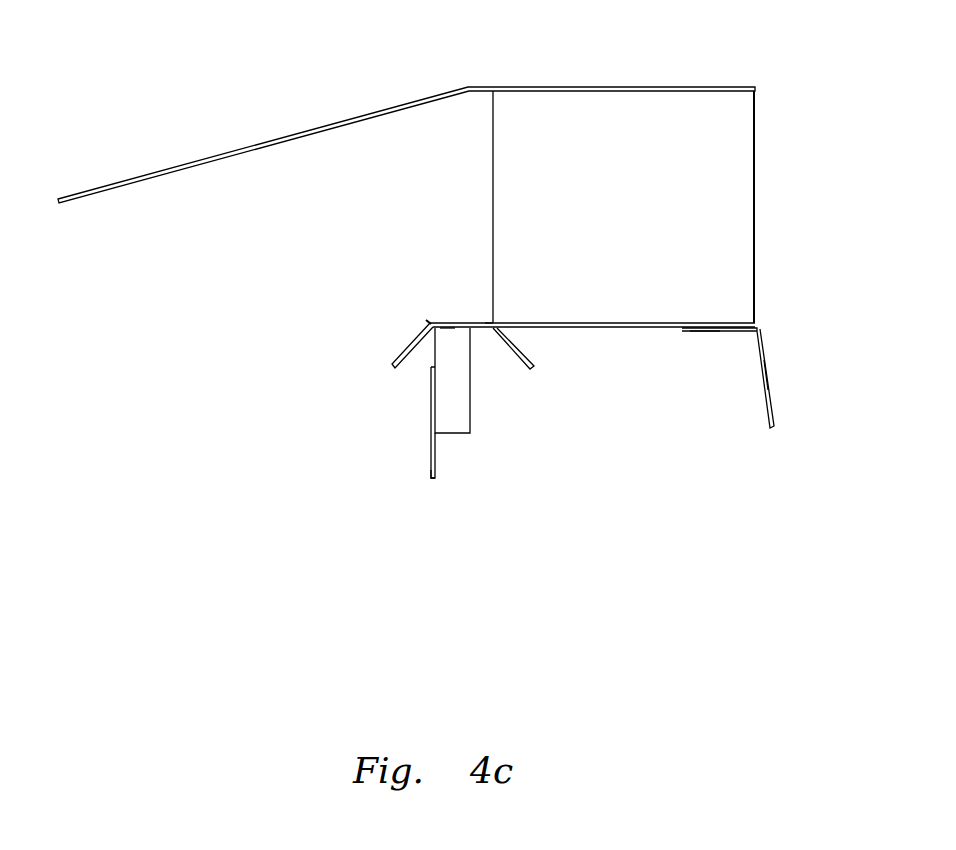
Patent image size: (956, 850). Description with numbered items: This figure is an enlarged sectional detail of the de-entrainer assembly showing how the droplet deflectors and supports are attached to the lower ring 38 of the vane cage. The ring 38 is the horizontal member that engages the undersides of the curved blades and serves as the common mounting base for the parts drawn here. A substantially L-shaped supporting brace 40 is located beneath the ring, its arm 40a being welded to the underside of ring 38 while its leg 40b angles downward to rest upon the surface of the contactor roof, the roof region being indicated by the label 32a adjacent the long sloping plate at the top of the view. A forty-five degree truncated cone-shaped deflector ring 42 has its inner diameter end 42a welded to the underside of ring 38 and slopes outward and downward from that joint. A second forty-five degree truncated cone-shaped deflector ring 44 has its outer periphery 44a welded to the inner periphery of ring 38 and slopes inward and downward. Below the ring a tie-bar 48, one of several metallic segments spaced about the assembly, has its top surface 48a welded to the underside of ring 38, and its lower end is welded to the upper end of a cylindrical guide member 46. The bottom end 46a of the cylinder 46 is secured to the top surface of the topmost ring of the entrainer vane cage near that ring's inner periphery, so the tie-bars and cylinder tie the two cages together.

The bent top plate 32a is at (468, 86).
The ring 38 is at (598, 327).
The L-shaped supporting brace 40 is at (845, 349).
The arm 40a is at (705, 332).
The leg 40b is at (771, 388).
The deflector ring 42 is at (495, 334).
The inner diameter end 42a is at (486, 321).
The deflector ring 44 is at (410, 347).
The outer periphery 44a is at (426, 318).
The cylindrical guide member 46 is at (437, 455).
The bottom end 46a is at (433, 480).
The tie-bar 48 is at (460, 422).
The top surface 48a is at (448, 330).